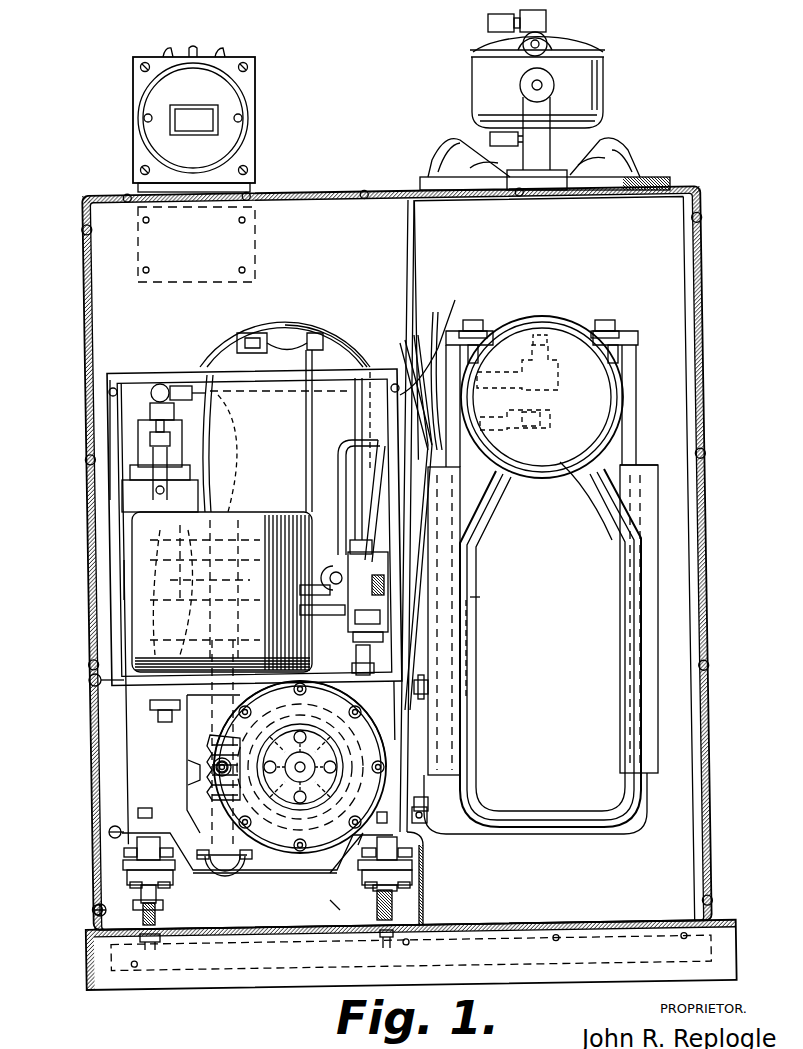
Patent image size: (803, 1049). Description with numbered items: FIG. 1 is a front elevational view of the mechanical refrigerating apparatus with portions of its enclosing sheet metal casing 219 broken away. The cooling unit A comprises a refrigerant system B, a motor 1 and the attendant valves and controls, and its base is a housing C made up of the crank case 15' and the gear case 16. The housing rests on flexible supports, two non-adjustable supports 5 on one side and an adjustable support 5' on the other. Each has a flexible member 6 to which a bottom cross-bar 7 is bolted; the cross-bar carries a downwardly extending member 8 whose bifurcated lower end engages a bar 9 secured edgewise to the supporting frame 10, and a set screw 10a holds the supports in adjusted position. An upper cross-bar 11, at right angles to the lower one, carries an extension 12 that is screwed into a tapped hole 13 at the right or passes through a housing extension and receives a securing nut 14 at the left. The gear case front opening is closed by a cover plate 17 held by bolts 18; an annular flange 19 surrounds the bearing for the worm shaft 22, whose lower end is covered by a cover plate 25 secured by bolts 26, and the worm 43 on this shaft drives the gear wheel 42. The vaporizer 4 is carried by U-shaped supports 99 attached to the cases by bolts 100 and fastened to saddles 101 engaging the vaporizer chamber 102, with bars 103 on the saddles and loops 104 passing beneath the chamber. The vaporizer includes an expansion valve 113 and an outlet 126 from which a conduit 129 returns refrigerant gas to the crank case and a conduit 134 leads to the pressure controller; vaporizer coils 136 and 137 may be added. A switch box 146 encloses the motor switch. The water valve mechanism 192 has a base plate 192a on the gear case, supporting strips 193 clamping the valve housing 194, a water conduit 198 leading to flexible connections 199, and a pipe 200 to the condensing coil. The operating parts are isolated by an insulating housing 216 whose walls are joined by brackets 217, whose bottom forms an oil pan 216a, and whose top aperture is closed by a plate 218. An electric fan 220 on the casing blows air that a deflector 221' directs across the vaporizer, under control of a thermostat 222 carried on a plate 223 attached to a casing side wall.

The motor 1 is at (130, 578).
The vaporizer 4 is at (605, 410).
The non-adjustable supports 5 is at (408, 943).
The adjustable support 5' is at (164, 947).
The flexible member 6 is at (412, 865).
The bottom cross-bar 7 is at (412, 882).
The downwardly extending member 8 is at (158, 892).
The bar 9 is at (163, 906).
The supporting frame 10 is at (411, 955).
The set screw 10a is at (94, 911).
The upper cross-bar 11 is at (398, 848).
The extension 12 is at (428, 826).
The tapped hole 13 is at (390, 812).
The securing nut 14 is at (140, 810).
The bracket 15' is at (342, 871).
The gear case 16 is at (195, 748).
The cover plate 17 is at (360, 735).
The bolts 18 is at (300, 685).
The annular flange 19 is at (115, 672).
The worm shaft 22 is at (135, 703).
The cover plate 25 is at (226, 862).
The bolts 26 is at (245, 880).
The gear wheel 42 is at (267, 803).
The worm 43 is at (190, 785).
The U-shaped supports 99 is at (510, 838).
The bolts 100 is at (440, 820).
The saddles 101 is at (522, 342).
The vaporizer chamber 102 is at (582, 330).
The bars 103 is at (612, 330).
The loops 104 is at (630, 355).
The expansion valve 113 is at (528, 429).
The outlet 126 is at (542, 369).
The conduit 129 is at (440, 355).
The conduit 134 is at (387, 367).
The vaporizer coil 136 is at (605, 508).
The vaporizer coil 137 is at (655, 460).
The switch box 146 is at (138, 503).
The water valve operating mechanism 192 is at (400, 610).
The base plate 192a is at (315, 655).
The supporting strips 193 is at (345, 575).
The valve housing 194 is at (370, 600).
The water conduit 198 is at (332, 335).
The flexible connections 199 is at (290, 330).
The pipe 200 is at (330, 497).
The housing 216 is at (152, 369).
The oil pan 216a is at (330, 900).
The brackets 217 is at (118, 376).
The plate 218 is at (228, 343).
The sheet metal casing 219 is at (700, 262).
The electric fan 220 is at (592, 85).
The deflector 221' is at (551, 561).
The thermostat 222 is at (232, 110).
The plate 223 is at (235, 185).
The cooling unit A is at (310, 222).
The refrigerant system B is at (470, 597).
The housing C is at (188, 770).